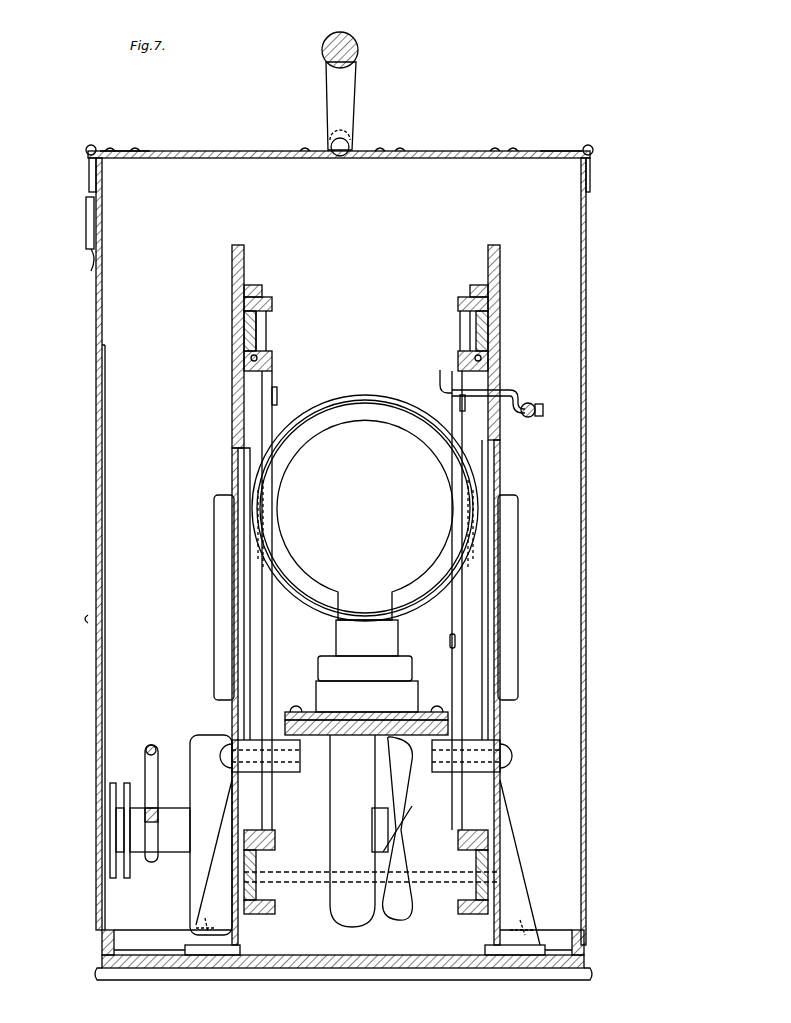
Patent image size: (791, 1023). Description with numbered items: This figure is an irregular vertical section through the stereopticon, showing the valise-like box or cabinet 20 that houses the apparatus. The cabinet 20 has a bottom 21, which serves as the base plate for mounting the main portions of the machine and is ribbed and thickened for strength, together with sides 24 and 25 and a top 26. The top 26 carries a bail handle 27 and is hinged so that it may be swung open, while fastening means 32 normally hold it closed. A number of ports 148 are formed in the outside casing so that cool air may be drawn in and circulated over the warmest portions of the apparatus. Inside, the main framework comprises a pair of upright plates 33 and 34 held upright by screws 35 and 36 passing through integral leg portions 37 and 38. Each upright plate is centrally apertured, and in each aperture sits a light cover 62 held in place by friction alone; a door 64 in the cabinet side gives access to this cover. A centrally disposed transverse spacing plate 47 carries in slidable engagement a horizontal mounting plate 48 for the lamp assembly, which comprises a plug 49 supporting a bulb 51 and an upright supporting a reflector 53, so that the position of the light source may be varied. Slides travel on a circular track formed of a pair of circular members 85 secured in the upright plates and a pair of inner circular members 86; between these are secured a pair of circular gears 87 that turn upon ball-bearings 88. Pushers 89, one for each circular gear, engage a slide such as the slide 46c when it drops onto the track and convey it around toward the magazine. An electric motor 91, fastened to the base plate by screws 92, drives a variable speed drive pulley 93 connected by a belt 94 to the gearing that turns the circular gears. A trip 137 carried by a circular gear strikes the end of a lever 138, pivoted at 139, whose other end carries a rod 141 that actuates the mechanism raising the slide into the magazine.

The box or cabinet 20 is at (410, 155).
The bottom 21 is at (418, 968).
The side 24 is at (586, 716).
The side 25 is at (96, 290).
The top 26 is at (268, 152).
The bail handle 27 is at (342, 45).
The fastening means 32 is at (86, 228).
The upright plate 33 is at (232, 418).
The upright plate 34 is at (500, 432).
The screws 35 is at (214, 920).
The screws 36 is at (525, 920).
The leg portions 37 is at (200, 928).
The leg portions 38 is at (528, 926).
The slide 46c is at (432, 872).
The transverse spacing plate 47 is at (356, 736).
The horizontal mounting plate 48 is at (372, 720).
The plug 49 is at (336, 641).
The bulb 51 is at (335, 570).
The reflector 53 is at (405, 592).
The light cover 62 is at (232, 660).
The door 64 is at (102, 426).
The circular members 85 is at (272, 304).
The inner circular members 86 is at (272, 358).
The circular gears 87 is at (266, 330).
The ball-bearings 88 is at (250, 358).
The pushers 89 is at (278, 400).
The electric motor 91 is at (212, 738).
The screws 92 is at (292, 955).
The variable speed drive pulley 93 is at (128, 783).
The belt 94 is at (151, 745).
The trip 137 is at (450, 648).
The lever 138 is at (440, 378).
The pivot 139 is at (495, 392).
The rod 141 is at (532, 404).
The ports 148 is at (220, 152).